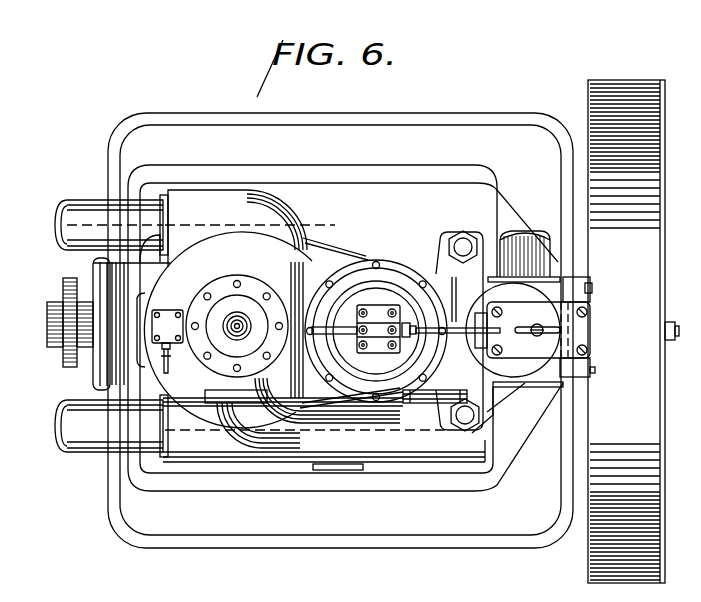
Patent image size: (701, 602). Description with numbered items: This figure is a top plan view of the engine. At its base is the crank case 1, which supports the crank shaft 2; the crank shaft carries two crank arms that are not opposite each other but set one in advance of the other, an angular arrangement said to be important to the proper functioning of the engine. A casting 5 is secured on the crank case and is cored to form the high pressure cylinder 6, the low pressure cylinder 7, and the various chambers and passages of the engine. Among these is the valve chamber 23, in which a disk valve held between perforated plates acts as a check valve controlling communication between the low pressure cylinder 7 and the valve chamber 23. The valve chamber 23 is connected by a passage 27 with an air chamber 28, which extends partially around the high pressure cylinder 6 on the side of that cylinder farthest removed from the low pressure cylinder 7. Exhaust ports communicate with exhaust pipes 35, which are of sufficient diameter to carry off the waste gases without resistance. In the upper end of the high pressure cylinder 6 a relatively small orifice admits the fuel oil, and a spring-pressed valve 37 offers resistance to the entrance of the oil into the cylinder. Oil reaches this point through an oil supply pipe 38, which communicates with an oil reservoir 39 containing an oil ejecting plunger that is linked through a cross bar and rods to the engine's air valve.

The crank case 1 is at (200, 143).
The crank shaft 2 is at (53, 320).
The casting 5 is at (318, 237).
The high pressure cylinder 6 is at (337, 302).
The low pressure cylinder 7 is at (192, 242).
The valve chamber 23 is at (230, 307).
The passage 27 is at (382, 456).
The air chamber 28 is at (498, 412).
The exhaust pipes 35 is at (87, 213).
The spring-pressed valve 37 is at (377, 327).
The oil supply pipe 38 is at (453, 318).
The oil reservoir 39 is at (585, 332).